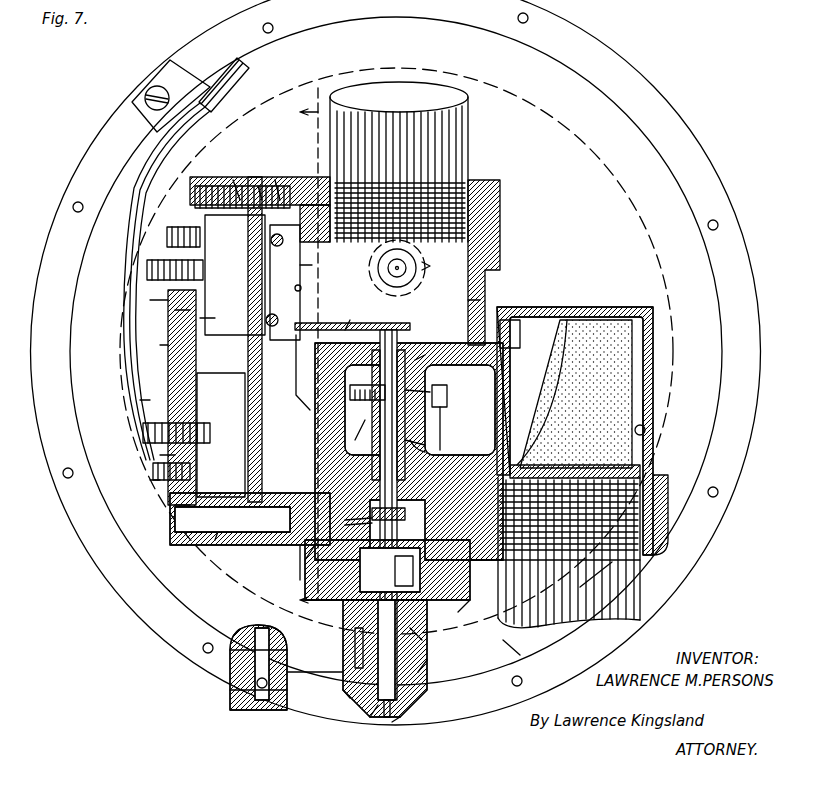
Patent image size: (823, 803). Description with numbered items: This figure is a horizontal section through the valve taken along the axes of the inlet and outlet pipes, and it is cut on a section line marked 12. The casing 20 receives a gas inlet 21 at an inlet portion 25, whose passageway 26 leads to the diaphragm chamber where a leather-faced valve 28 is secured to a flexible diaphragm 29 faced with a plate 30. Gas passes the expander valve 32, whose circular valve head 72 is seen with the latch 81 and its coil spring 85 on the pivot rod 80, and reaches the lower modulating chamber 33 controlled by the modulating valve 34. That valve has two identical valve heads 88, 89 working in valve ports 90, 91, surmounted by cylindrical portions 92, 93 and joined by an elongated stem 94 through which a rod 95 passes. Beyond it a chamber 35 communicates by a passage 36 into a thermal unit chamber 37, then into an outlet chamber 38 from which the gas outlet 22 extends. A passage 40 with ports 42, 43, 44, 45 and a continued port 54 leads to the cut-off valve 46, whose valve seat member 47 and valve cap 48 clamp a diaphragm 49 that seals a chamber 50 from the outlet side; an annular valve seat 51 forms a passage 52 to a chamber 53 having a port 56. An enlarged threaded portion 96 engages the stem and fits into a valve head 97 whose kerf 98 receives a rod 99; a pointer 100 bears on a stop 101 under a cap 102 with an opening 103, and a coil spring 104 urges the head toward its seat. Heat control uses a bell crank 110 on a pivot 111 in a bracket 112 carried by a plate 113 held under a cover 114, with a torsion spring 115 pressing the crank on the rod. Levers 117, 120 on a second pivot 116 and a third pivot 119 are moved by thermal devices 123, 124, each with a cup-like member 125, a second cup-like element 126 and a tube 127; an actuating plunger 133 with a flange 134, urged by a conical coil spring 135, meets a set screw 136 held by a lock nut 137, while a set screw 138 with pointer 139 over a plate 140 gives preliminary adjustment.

The casing 20 is at (703, 270).
The plate 30 is at (614, 206).
The section line 12 is at (307, 345).
The gas outlet 22 is at (466, 172).
The outlet chamber 38 is at (455, 286).
The expander valve 32 is at (416, 268).
The circular valve head 72 is at (428, 278).
The latch 81 is at (345, 329).
The lower modulating chamber 33 is at (492, 392).
The valve port 91 is at (508, 354).
The port 45 is at (405, 498).
The diaphragm 49 is at (408, 515).
The enlarged threaded portion 96 is at (378, 496).
The chamber 50 is at (470, 572).
The port 56 is at (468, 594).
The passage 52 is at (372, 597).
The chamber 53 is at (415, 628).
The annular valve seat 51 is at (413, 600).
The valve head 97 is at (427, 645).
The valve cap 48 is at (466, 624).
The rod 99 is at (427, 665).
The cap 102 is at (402, 712).
The pointer 100 is at (392, 715).
The opening 103 is at (392, 705).
The stop 101 is at (348, 702).
The coil spring 104 is at (312, 666).
The kerf 98 is at (343, 615).
The passage 40 is at (221, 705).
The port 42 is at (254, 683).
The second port 43 is at (236, 655).
The passageway 26 is at (613, 318).
The leather-faced valve 28 is at (606, 396).
The chamber 35 is at (474, 452).
The flexible diaphragm 29 is at (646, 412).
The inlet portion 25 is at (653, 430).
The gas inlet 21 is at (646, 580).
The valve seat member 47 is at (506, 560).
The cylindrical portion 92 is at (584, 582).
The cut-off valve 46 is at (506, 664).
The third pivot 119 is at (288, 440).
The pivot 111 is at (264, 300).
The cover 114 is at (218, 178).
The second cup-like element 126 is at (234, 180).
The plate 113 is at (258, 186).
The bracket 112 is at (275, 180).
The pointer 139 is at (167, 250).
The conical coil spring 135 is at (182, 213).
The set screw 138 is at (150, 272).
The actuating plunger 133 is at (198, 318).
The additional port 44 is at (265, 545).
The continued port 54 is at (300, 580).
The thermal unit chamber 37 is at (315, 548).
The plate 140 is at (160, 346).
The flange 134 is at (140, 400).
The cup-like member 125 is at (175, 310).
The thermal device 124 is at (150, 300).
The thermal device 123 is at (153, 480).
The tube 127 is at (247, 78).
The second pivot 116 is at (286, 258).
The lever 117 is at (330, 262).
The torsion spring 115 is at (312, 272).
The lock nut 137 is at (321, 283).
The bell crank 110 is at (350, 320).
The lever 120 is at (298, 380).
The set screw 136 is at (305, 405).
The coil spring 85 is at (356, 383).
The valve port 90 is at (352, 400).
The passage 36 is at (346, 427).
The cylindrical portion 93 is at (432, 390).
The pivot rod 80 is at (453, 396).
The elongated stem 94 is at (460, 426).
The modulating valve 34 is at (425, 445).
The valve head 88 is at (425, 452).
The valve head 89 is at (416, 358).
The rod 95 is at (405, 332).